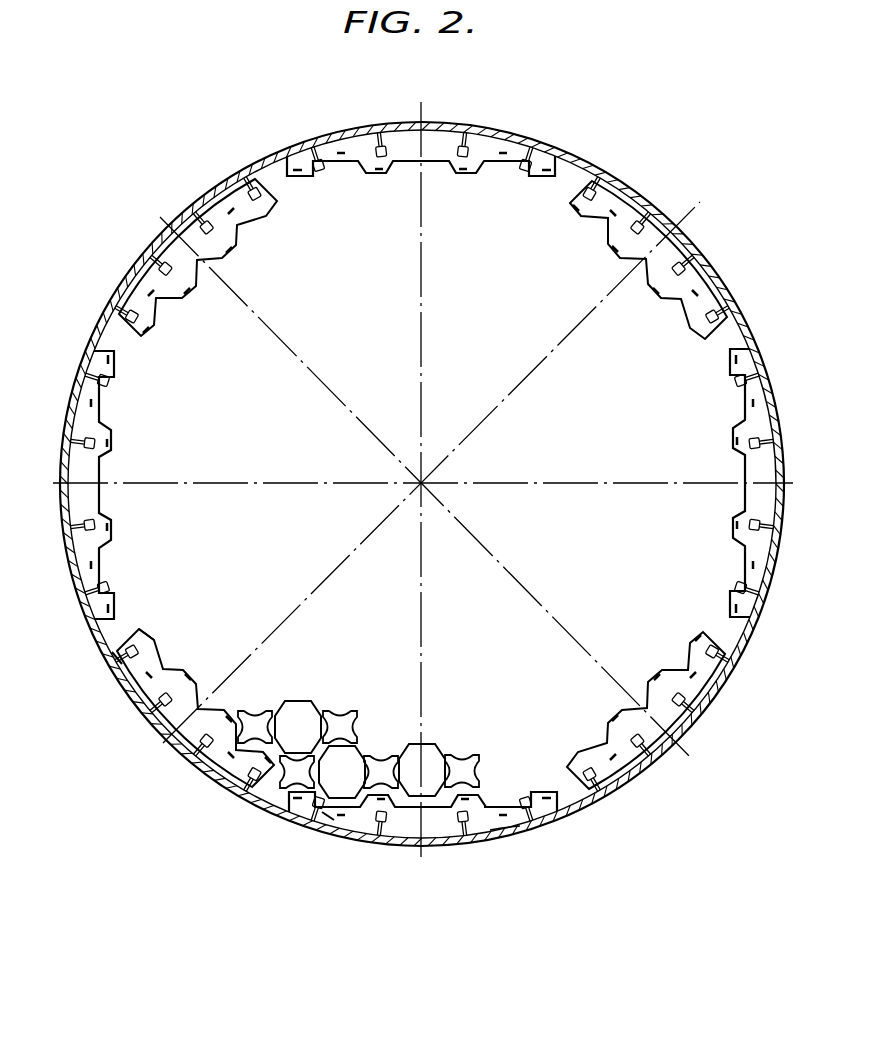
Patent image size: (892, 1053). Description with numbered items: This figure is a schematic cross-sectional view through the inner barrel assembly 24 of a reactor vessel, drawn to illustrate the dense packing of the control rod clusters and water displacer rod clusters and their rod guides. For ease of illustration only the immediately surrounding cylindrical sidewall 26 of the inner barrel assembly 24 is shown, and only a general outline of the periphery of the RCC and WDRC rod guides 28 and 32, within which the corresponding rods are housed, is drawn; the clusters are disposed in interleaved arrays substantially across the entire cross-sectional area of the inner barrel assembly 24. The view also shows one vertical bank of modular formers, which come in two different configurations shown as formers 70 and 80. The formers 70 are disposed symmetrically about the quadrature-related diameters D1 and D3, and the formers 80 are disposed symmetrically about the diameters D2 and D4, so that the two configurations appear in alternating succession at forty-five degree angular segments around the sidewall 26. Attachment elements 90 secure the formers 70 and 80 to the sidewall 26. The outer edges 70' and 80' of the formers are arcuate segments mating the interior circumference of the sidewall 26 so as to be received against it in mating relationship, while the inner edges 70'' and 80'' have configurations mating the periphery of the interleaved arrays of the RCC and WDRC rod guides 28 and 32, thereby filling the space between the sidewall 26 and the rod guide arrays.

The inner barrel assembly 24 is at (121, 192).
The cylindrical sidewall 26 is at (202, 201).
The RCC rod guide 28 is at (254, 710).
The WDRC rod guide 32 is at (311, 739).
The modular former 70 is at (422, 514).
The outer edge 70' is at (513, 853).
The inner edge 70'' is at (507, 776).
The modular former 80 is at (422, 495).
The outer edge 80' is at (129, 683).
The inner edge 80'' is at (193, 709).
The attachment element 90 is at (116, 654).
The diameter D1 is at (424, 597).
The diameter D2 is at (356, 551).
The diameter D3 is at (532, 489).
The diameter D4 is at (338, 396).